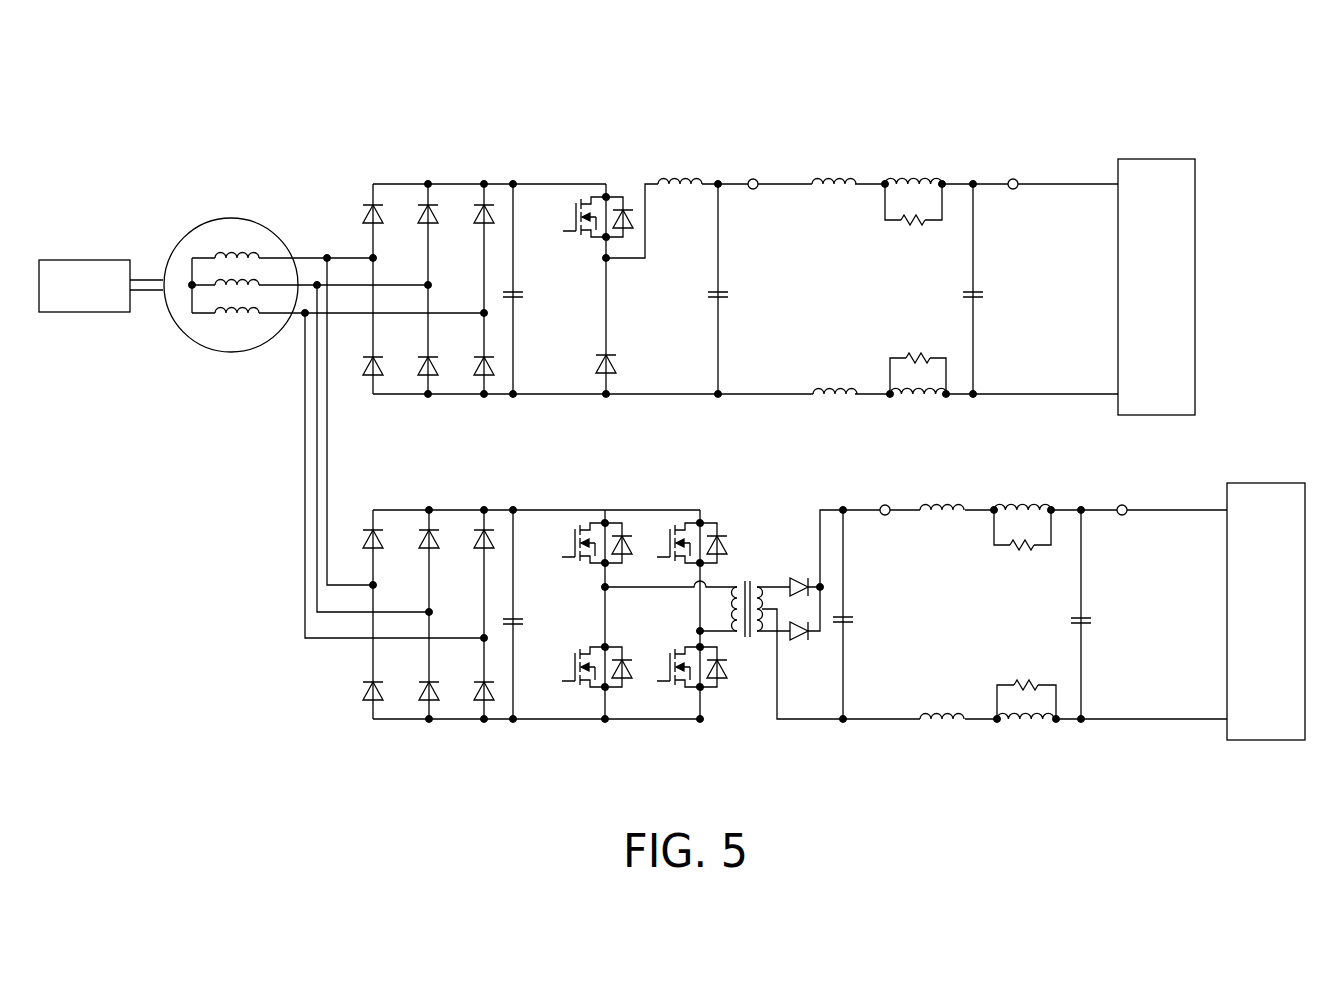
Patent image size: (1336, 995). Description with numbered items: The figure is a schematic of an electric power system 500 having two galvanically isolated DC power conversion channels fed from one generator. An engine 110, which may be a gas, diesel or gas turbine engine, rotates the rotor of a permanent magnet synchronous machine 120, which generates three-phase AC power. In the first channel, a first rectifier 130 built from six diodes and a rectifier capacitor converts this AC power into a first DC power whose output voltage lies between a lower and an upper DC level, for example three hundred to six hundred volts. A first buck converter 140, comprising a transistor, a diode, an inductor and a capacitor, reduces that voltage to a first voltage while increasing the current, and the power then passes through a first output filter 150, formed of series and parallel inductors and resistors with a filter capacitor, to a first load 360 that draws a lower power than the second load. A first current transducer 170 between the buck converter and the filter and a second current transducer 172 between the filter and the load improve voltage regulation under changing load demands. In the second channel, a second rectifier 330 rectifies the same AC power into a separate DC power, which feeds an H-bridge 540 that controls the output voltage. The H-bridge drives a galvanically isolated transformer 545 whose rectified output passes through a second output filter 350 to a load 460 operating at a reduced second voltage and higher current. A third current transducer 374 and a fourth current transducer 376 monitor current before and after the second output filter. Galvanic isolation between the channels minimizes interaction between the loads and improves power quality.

The electric power system 500 is at (79, 87).
The engine 110 is at (67, 260).
The permanent magnet synchronous machine 120 is at (186, 232).
The first rectifier 130 is at (348, 137).
The first buck converter 140 is at (547, 137).
The first output filter 150 is at (798, 137).
The first current transducer 170 is at (765, 197).
The second current transducer 172 is at (1022, 195).
The first load 360 is at (1092, 137).
The second rectifier 330 is at (350, 480).
The H-bridge 540 is at (550, 480).
The galvanically isolated transformer 545 is at (727, 480).
The second output filter 350 is at (910, 480).
The third current transducer 374 is at (889, 530).
The fourth current transducer 376 is at (1131, 530).
The load 460 is at (1213, 480).